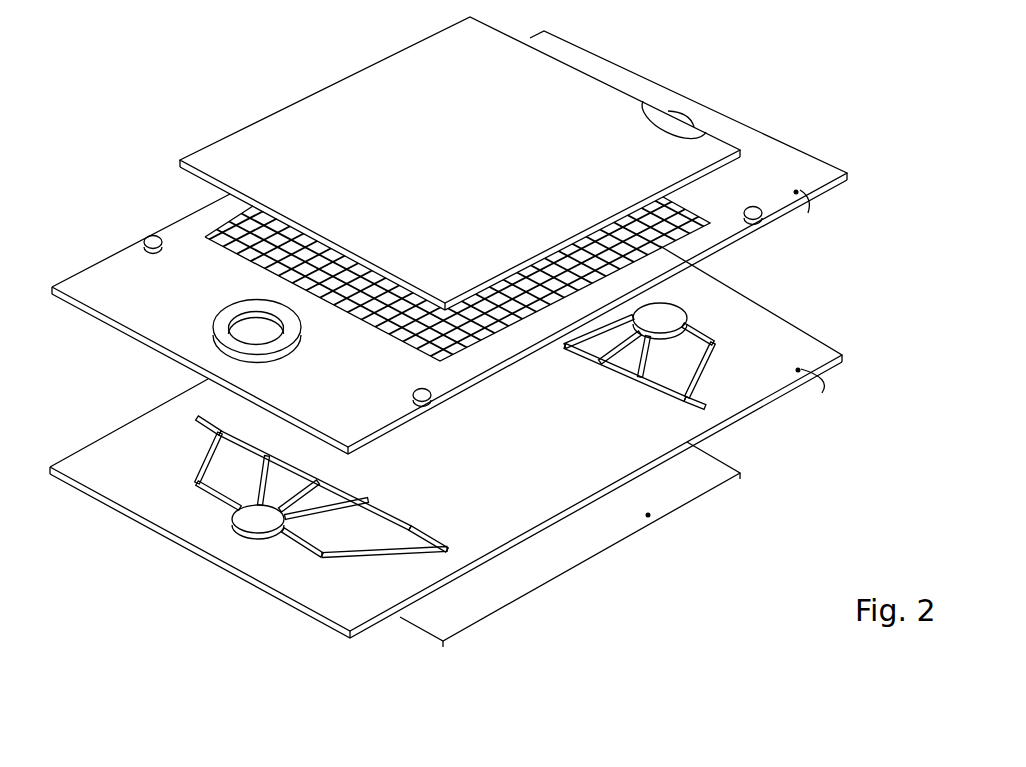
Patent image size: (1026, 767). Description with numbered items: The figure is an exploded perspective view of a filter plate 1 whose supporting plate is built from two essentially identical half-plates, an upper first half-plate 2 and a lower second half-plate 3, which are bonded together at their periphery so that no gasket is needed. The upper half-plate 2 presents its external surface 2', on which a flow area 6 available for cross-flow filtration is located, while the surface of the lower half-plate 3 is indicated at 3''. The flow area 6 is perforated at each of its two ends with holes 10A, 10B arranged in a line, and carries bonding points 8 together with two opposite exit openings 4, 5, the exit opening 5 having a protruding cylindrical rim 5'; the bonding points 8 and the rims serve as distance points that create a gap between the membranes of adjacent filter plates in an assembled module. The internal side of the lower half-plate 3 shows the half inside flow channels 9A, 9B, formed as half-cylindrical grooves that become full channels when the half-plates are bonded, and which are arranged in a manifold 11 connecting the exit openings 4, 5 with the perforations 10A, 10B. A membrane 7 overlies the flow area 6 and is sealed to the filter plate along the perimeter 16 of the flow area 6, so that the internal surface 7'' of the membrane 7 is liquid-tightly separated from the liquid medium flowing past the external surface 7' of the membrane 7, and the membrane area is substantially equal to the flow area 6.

The filter plate 1 is at (146, 139).
The first half-plate 2 is at (474, 242).
The external surface of the first half-plate 2' is at (812, 218).
The second half-plate 3 is at (477, 442).
The lower surface of second carrier plate 3'' is at (829, 389).
The exit opening 4 is at (693, 110).
The exit opening 5 is at (155, 443).
The protruding cylindrical rim 5' is at (137, 347).
The flow area 6 is at (690, 262).
The membrane 7 is at (460, 332).
The external surface of the membrane 7' is at (266, 99).
The internal surface of the membrane 7'' is at (447, 326).
The bonding points 8 is at (143, 238).
The flow channel 9A is at (207, 452).
The flow channel 9B is at (715, 377).
The perforations 10A is at (220, 233).
The perforations 10B is at (693, 232).
The manifold 11 is at (182, 466).
The perimeter of the flow area 16 is at (683, 207).